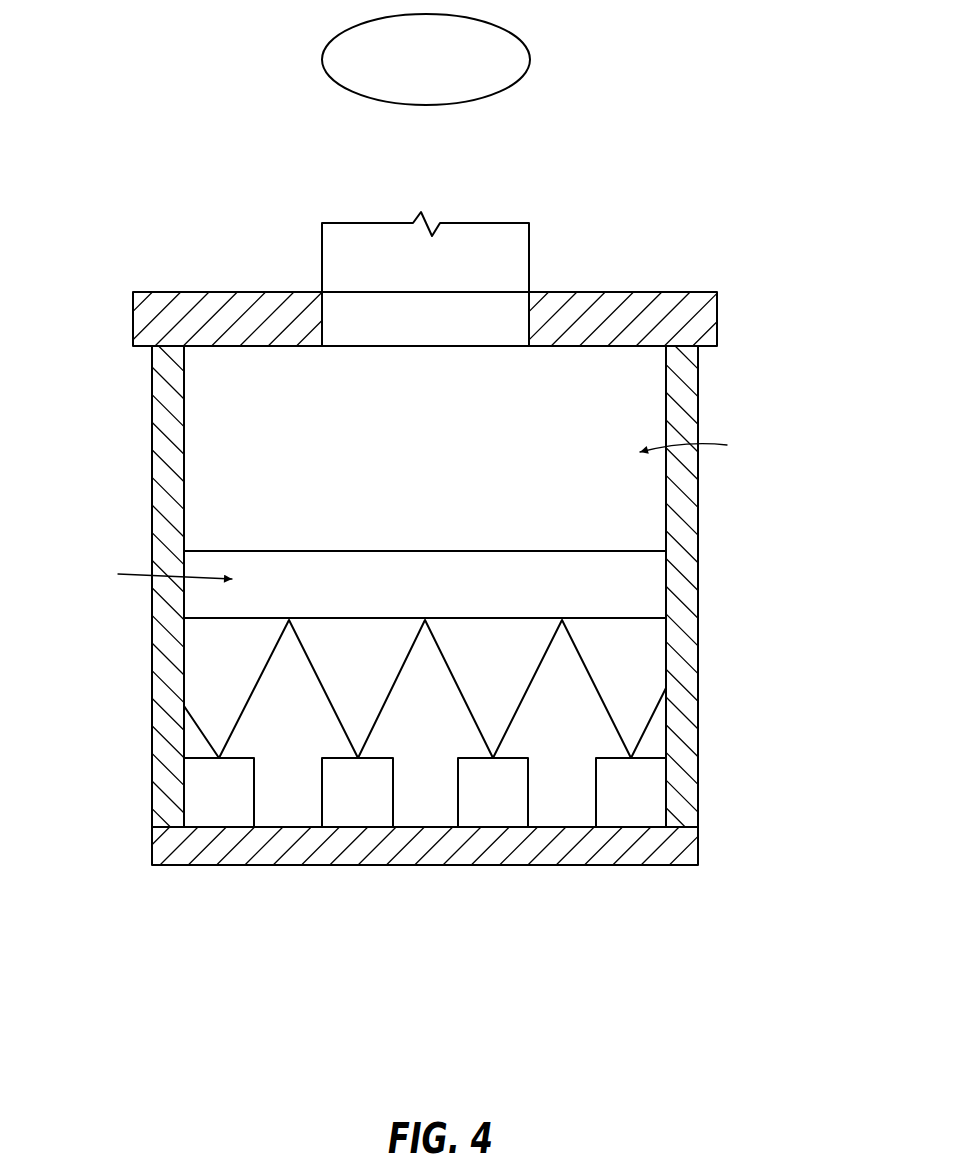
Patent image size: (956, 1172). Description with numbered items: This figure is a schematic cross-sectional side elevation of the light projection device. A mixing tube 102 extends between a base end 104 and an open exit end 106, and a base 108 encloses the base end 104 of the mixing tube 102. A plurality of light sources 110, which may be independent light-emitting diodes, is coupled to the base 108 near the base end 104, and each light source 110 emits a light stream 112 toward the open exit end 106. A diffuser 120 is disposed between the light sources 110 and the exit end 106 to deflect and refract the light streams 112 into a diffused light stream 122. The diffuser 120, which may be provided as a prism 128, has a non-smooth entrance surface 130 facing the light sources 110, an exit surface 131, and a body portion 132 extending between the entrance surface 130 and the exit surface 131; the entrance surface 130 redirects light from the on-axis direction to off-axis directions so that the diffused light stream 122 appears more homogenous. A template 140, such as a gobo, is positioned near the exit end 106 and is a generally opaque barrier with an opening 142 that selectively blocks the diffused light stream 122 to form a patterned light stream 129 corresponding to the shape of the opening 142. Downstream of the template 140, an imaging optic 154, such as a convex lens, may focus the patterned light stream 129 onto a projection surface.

The imaging optic 154 is at (530, 60).
The patterned light stream 129 is at (529, 261).
The openings 142 is at (323, 318).
The template 140 is at (682, 317).
The exit end 106 is at (167, 343).
The mixing tube 102 is at (165, 448).
The diffused light stream 122 is at (698, 445).
The exit surface 131 is at (309, 550).
The body portion 132 is at (510, 565).
The prism 128 is at (156, 574).
The diffuser 120 is at (636, 610).
The entrance surface 130 is at (520, 620).
The light stream 112 is at (493, 676).
The light sources 110 is at (224, 818).
The base 108 is at (680, 848).
The base end 104 is at (168, 818).